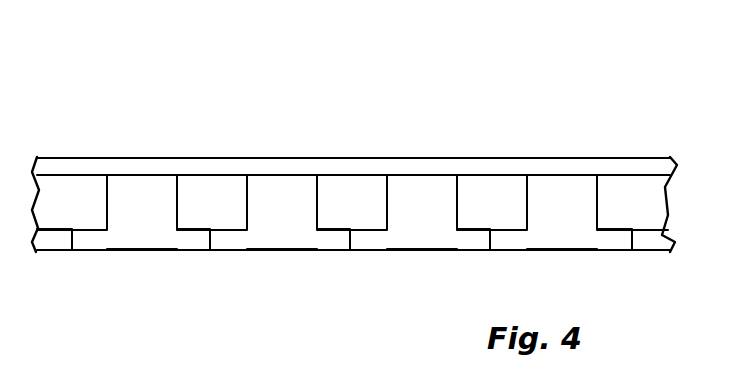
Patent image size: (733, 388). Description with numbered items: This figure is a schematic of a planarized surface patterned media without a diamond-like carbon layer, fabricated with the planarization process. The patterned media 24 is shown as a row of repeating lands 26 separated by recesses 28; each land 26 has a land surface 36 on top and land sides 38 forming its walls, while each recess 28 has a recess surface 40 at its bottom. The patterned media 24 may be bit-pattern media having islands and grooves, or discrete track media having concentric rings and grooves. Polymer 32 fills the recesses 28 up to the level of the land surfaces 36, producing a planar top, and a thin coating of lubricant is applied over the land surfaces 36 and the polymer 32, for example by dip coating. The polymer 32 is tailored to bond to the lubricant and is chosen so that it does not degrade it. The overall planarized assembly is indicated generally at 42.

The patterned media 24 is at (427, 262).
The lands 26 is at (137, 233).
The recesses 28 is at (50, 223).
The polymer 32 is at (71, 182).
The land surfaces 36 is at (128, 168).
The land sides 38 is at (107, 190).
The recess surfaces 40 is at (72, 250).
The structured assembly 42 is at (573, 87).